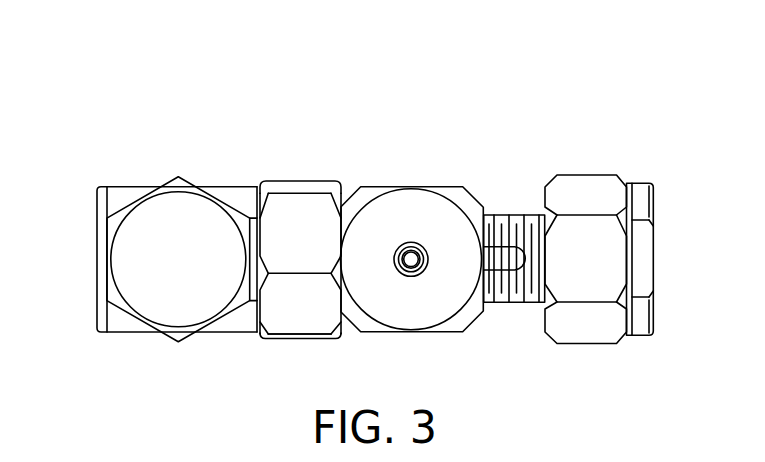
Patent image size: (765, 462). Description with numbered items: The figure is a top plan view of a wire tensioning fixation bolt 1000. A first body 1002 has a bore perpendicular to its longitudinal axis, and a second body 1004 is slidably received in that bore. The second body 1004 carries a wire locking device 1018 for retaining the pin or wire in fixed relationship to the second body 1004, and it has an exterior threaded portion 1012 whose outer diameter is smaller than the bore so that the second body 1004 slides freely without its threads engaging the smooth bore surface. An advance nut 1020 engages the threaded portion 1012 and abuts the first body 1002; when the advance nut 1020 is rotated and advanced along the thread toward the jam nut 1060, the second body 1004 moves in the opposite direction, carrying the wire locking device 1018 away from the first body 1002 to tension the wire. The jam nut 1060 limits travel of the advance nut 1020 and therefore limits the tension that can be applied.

The wire tensioning fixation bolt 1000 is at (390, 100).
The wire locking device 1018 is at (160, 173).
The second body 1004 is at (234, 181).
The advance nut 1020 is at (315, 332).
The first body 1002 is at (449, 178).
The threaded portion 1012 is at (531, 302).
The jam nut 1060 is at (582, 175).